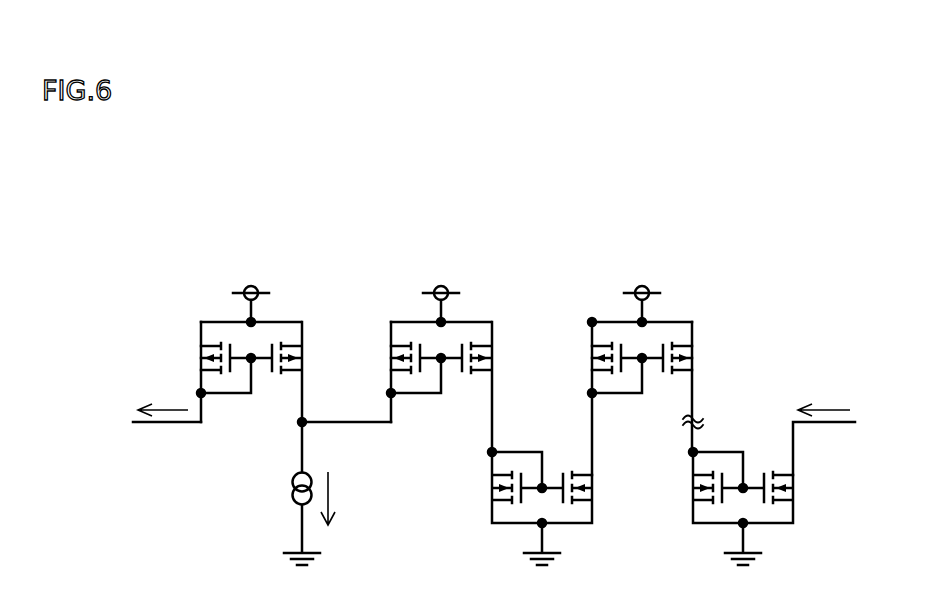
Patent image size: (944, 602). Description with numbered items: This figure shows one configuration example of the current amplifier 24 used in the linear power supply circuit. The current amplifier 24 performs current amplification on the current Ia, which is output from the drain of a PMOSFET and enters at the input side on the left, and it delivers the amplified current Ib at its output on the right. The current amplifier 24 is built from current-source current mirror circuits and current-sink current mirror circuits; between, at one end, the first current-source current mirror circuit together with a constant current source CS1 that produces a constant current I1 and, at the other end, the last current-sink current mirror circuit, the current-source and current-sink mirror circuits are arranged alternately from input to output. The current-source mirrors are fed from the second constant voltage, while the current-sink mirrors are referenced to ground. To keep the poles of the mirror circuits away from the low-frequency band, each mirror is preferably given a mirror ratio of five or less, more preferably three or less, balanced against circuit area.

The current amplifier 24 is at (494, 369).
The constant current source CS1 is at (292, 494).
The current Ia is at (163, 400).
The current Ib is at (824, 401).
The constant current I1 is at (338, 497).